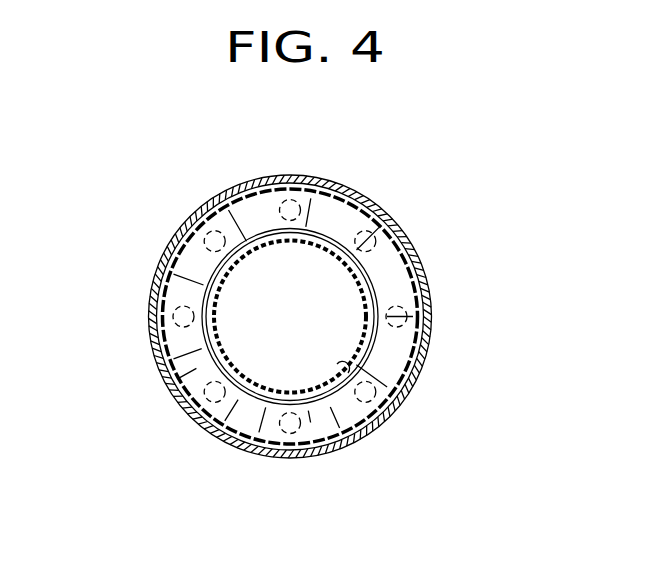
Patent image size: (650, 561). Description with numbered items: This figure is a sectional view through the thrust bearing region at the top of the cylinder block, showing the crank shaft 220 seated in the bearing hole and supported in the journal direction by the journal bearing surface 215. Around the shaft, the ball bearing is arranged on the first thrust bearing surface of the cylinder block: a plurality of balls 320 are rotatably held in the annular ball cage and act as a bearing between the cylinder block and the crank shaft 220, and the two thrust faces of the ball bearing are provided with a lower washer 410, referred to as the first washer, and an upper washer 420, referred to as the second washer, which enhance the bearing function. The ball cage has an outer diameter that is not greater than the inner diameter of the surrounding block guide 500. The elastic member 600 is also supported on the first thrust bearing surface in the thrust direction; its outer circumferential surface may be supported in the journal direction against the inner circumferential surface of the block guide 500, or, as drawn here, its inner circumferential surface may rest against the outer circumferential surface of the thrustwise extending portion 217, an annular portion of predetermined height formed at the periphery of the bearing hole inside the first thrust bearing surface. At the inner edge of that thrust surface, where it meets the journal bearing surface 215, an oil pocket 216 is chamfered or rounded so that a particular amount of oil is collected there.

The lower washer 410 is at (243, 186).
The balls 320 is at (183, 227).
The upper washer 420 is at (193, 267).
The block guide 500 is at (150, 310).
The elastic member 600 is at (163, 383).
The crank shaft 220 is at (372, 343).
The journal bearing surface 215 is at (372, 383).
The oil pocket 216 is at (335, 407).
The thrustwise extending portion 217 is at (253, 450).